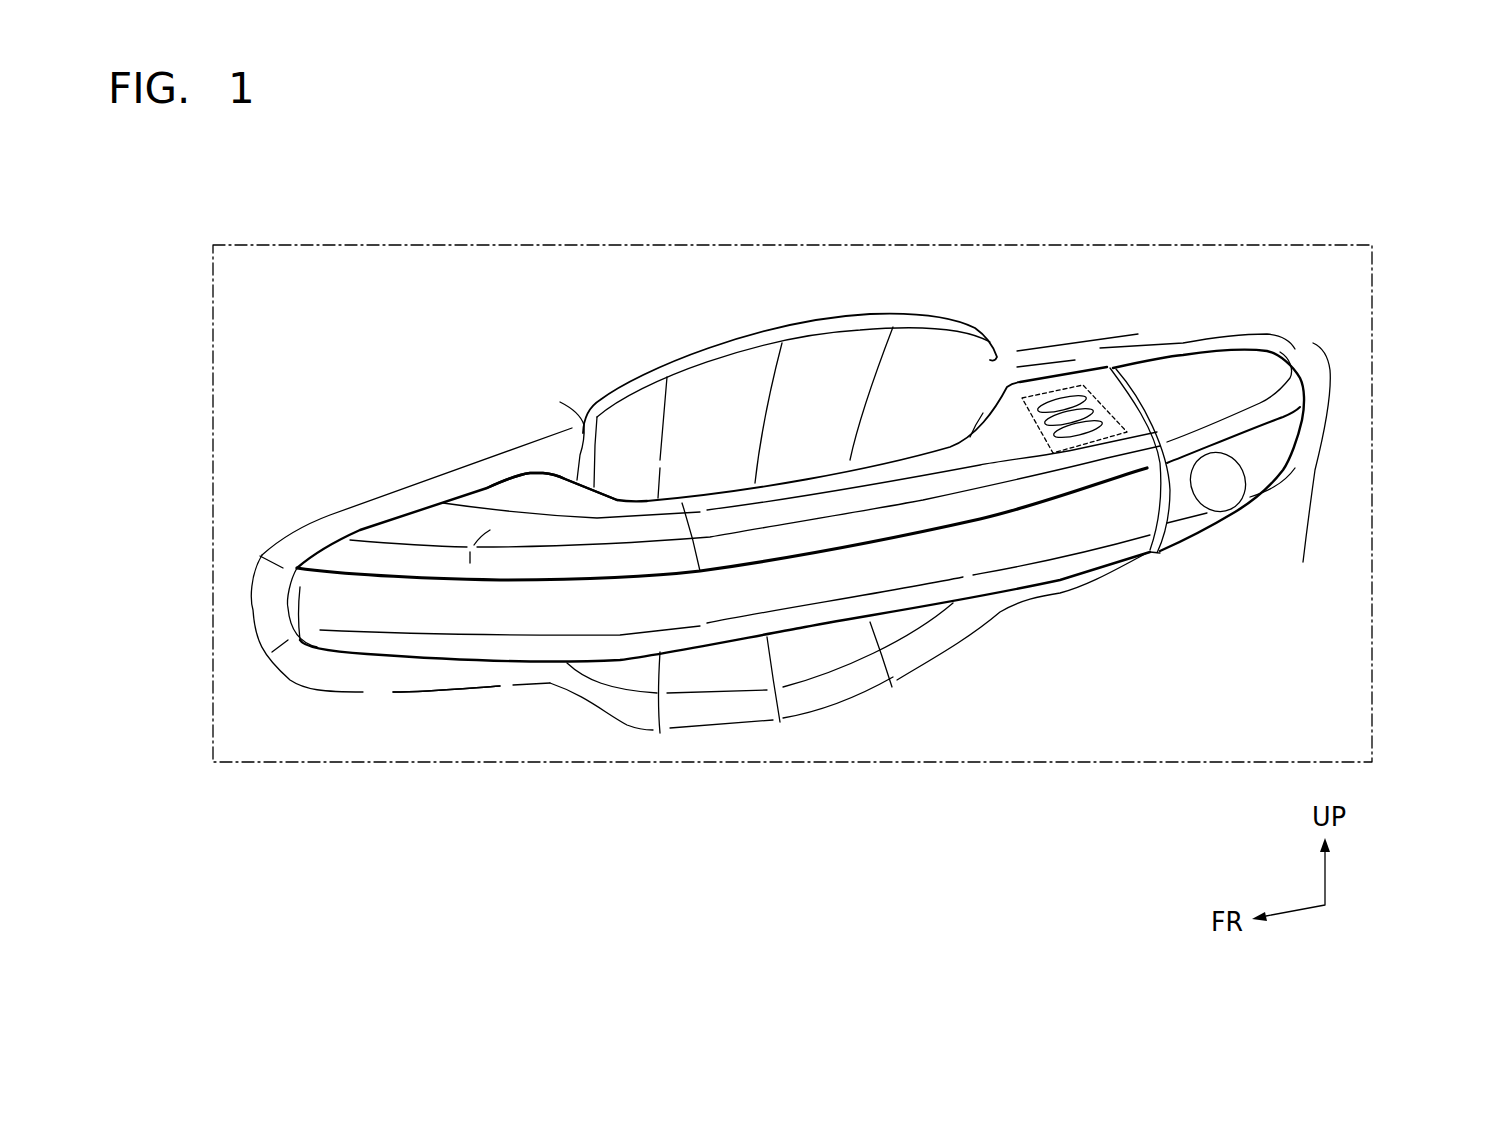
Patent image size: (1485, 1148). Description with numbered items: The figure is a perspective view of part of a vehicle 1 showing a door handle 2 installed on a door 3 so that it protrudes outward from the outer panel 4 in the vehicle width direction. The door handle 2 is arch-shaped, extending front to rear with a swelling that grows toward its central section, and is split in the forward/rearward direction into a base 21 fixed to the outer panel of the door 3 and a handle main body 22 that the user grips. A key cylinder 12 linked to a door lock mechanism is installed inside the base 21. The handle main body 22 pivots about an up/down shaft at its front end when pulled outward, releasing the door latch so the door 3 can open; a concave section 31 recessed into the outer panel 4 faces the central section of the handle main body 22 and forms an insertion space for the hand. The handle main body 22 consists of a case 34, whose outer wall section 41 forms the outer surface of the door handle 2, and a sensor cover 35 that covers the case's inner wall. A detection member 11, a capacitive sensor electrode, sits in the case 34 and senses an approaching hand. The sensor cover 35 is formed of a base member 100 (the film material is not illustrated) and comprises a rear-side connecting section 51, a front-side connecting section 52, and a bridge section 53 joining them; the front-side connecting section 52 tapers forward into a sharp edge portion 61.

The vehicle 1 is at (1263, 272).
The door handle 2 is at (1318, 366).
The door 3 is at (1360, 311).
The outer panel 4 is at (1305, 562).
The detection member 11 is at (1045, 392).
The key cylinder 12 is at (1227, 480).
The base 21 is at (1185, 339).
The handle main body 22 is at (1073, 358).
The concave section 31 is at (803, 413).
The case 34 is at (377, 640).
The sensor cover 35 is at (542, 458).
The outer wall section 41 is at (446, 765).
The rear-side connecting section 51 is at (1018, 383).
The front-side connecting section 52 is at (512, 495).
The bridge section 53 is at (740, 507).
The edge portion 61 is at (413, 533).
The base member 100 is at (556, 411).